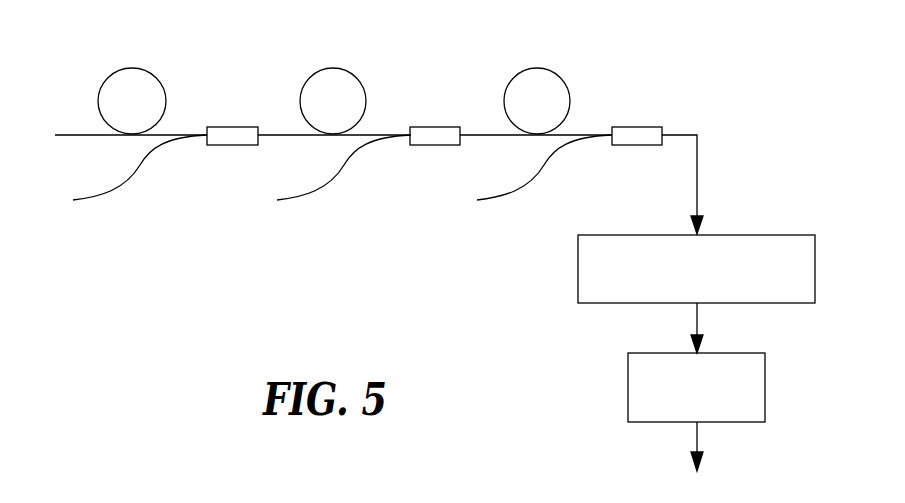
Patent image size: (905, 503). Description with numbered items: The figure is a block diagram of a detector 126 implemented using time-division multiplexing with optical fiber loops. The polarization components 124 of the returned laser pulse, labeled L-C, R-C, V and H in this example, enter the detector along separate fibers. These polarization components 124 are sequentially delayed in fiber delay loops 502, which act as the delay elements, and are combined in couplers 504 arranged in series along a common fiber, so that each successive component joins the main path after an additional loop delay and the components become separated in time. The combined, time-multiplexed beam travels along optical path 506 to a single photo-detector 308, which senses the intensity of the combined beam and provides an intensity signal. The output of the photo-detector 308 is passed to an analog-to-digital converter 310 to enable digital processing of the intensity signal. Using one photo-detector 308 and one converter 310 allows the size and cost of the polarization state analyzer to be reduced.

The polarization component beams 124 is at (73, 137).
The intensity detector 126 is at (350, 308).
The fiber delay loops 502 is at (126, 70).
The couplers 504 is at (228, 127).
The optical path 506 is at (698, 183).
The photo-detector 308 is at (578, 290).
The analog-to-digital converter (ADC) 310 is at (628, 395).